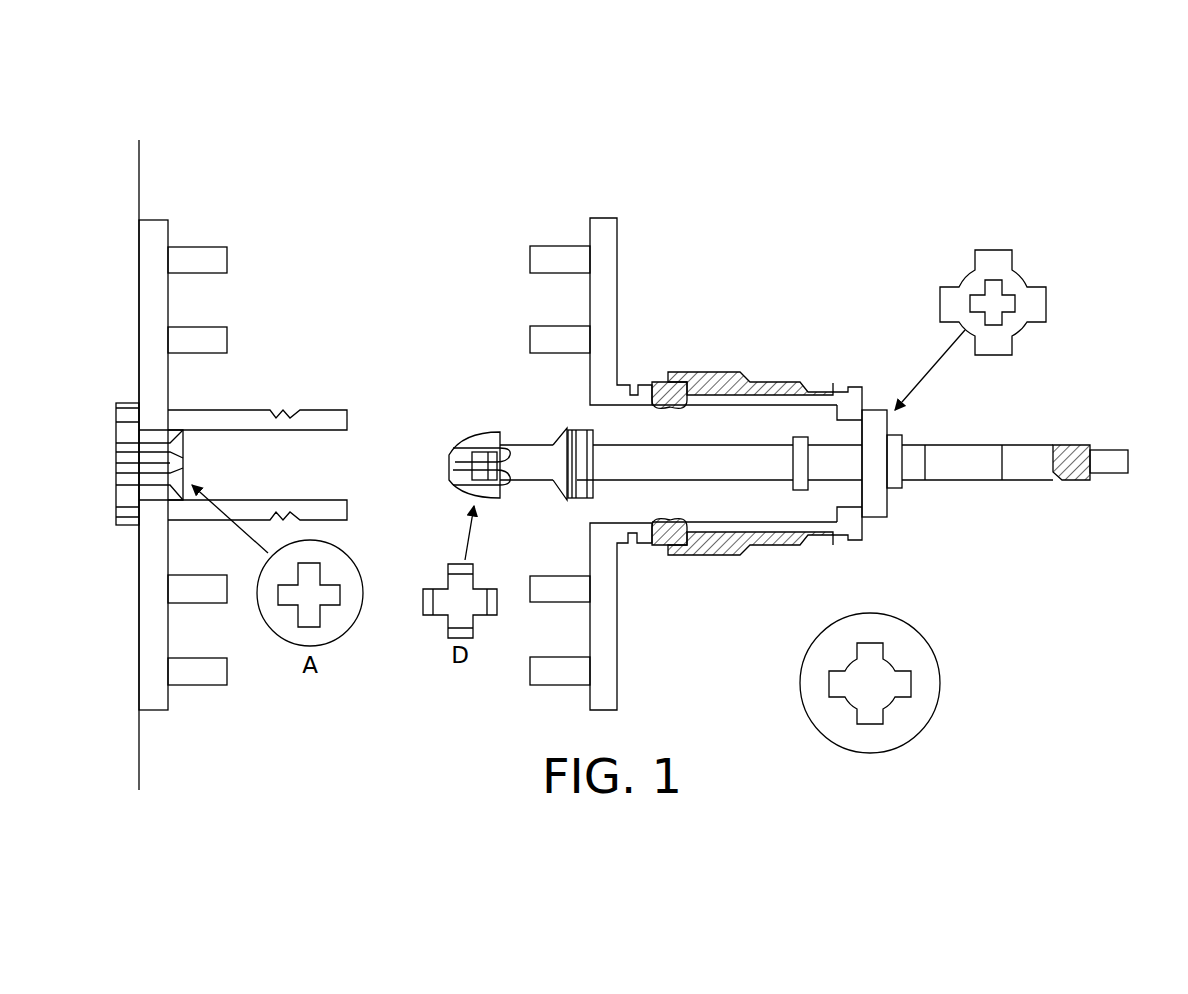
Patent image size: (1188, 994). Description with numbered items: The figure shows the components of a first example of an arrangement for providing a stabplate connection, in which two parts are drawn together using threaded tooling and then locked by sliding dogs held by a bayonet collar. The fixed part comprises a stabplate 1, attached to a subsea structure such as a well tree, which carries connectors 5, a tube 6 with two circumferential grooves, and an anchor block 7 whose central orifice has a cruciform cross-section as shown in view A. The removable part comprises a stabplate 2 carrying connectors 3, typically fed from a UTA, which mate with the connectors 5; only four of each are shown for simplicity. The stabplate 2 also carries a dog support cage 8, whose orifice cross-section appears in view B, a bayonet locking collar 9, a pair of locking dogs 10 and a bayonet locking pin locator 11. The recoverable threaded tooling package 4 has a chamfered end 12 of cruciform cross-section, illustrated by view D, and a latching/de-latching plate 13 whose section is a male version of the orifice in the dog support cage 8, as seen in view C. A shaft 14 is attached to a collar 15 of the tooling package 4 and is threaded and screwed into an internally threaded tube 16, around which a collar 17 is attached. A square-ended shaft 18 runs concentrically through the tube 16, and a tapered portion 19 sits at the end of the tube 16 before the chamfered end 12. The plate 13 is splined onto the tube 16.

The stabplate 1 is at (160, 220).
The stabplate 2 is at (612, 218).
The connectors 3 is at (541, 246).
The threaded tooling package 4 is at (534, 436).
The connectors 5 is at (215, 247).
The tube 6 is at (240, 410).
The anchor block 7 is at (122, 527).
The dog support cage 8 is at (870, 397).
The bayonet locking collar 9 is at (785, 548).
The locking dogs 10 is at (668, 550).
The bayonet locking pin locator 11 is at (637, 385).
The chamfered end 12 is at (490, 432).
The latching/de-latching plate 13 is at (990, 250).
The shaft 14 is at (1070, 445).
The collar 15 is at (898, 490).
The internally threaded tube 16 is at (737, 445).
The collar 17 is at (797, 437).
The square-ended shaft 18 is at (1115, 450).
The tapered portion 19 is at (562, 497).